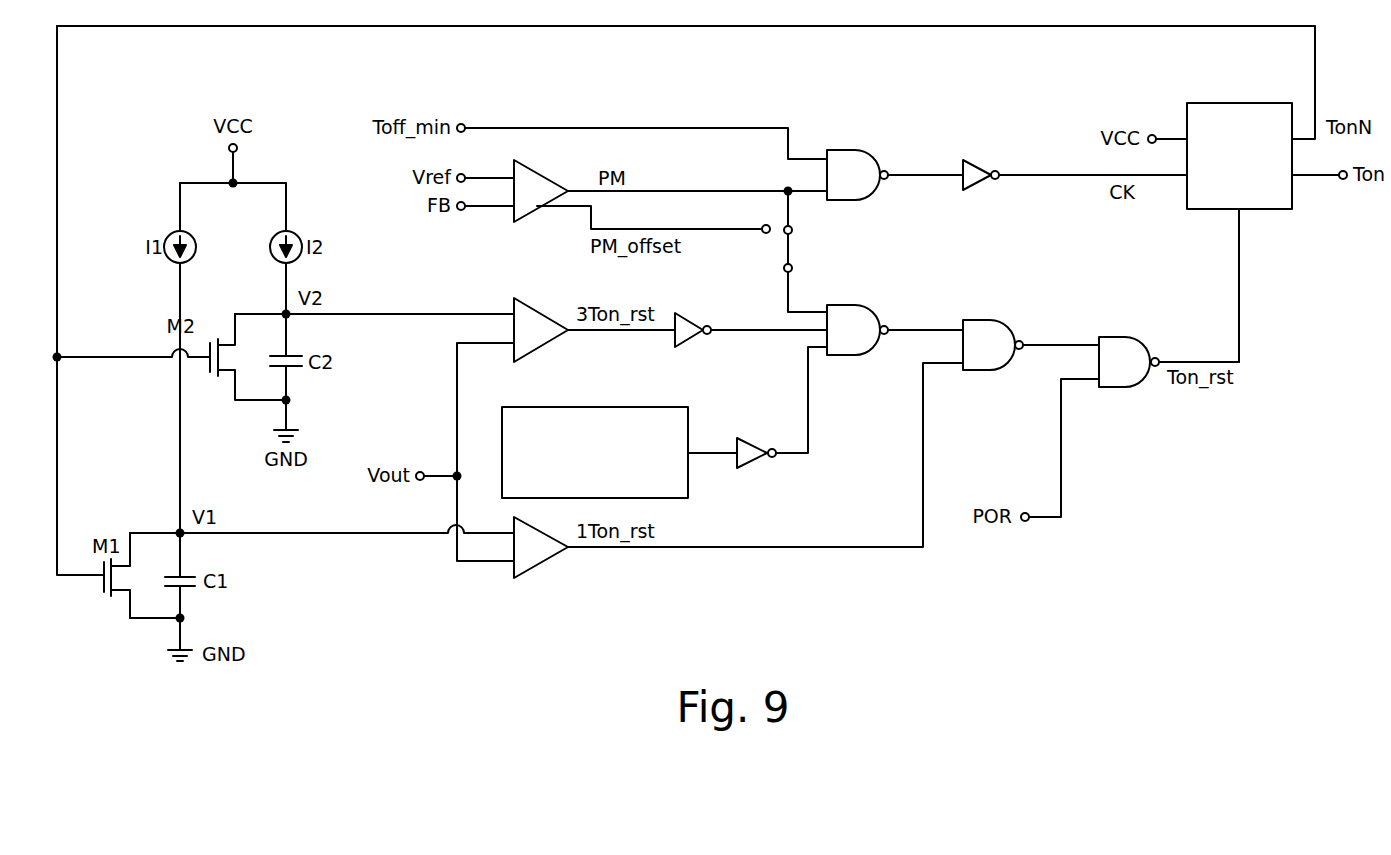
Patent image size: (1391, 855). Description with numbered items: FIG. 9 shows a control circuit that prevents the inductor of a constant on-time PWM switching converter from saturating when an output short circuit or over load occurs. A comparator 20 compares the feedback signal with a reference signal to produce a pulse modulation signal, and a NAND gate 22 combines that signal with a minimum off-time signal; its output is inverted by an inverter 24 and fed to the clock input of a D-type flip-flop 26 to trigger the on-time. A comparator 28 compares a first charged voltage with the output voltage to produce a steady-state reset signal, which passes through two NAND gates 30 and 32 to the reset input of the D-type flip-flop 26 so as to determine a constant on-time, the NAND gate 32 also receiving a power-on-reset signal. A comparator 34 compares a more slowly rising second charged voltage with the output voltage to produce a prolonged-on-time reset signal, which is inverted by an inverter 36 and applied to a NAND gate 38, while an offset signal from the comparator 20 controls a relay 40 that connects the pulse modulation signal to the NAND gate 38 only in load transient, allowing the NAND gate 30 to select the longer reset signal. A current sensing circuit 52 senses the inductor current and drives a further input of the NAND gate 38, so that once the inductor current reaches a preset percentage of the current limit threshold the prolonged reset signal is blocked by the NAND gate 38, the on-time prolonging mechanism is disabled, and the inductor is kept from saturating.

The comparator 20 is at (527, 216).
The NAND gate 22 is at (857, 150).
The inverter 24 is at (978, 162).
The D-type flip-flop 26 is at (1207, 210).
The comparator 28 is at (545, 562).
The NAND gate 30 is at (990, 320).
The NAND gate 32 is at (1115, 388).
The comparator 34 is at (545, 345).
The inverter 36 is at (688, 347).
The NAND gate 38 is at (857, 305).
The relay 40 is at (762, 262).
The current sensing circuit 52 is at (690, 483).